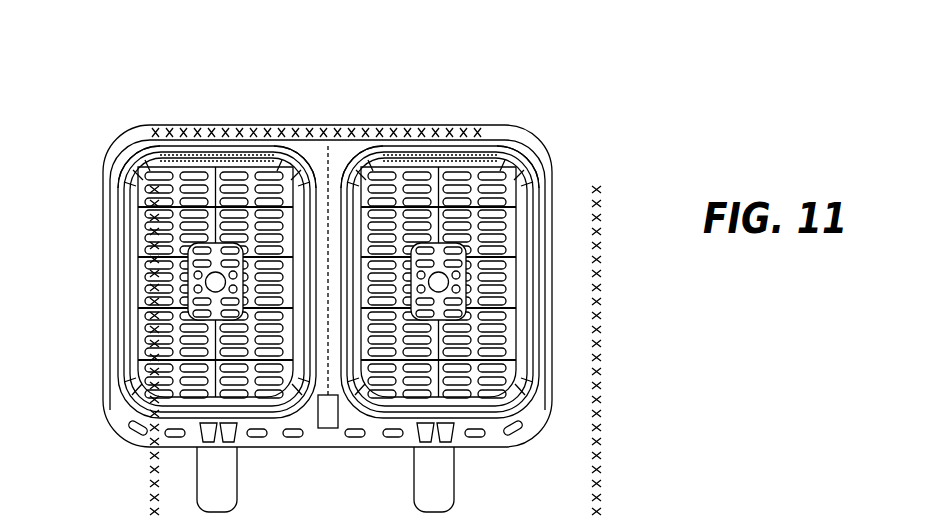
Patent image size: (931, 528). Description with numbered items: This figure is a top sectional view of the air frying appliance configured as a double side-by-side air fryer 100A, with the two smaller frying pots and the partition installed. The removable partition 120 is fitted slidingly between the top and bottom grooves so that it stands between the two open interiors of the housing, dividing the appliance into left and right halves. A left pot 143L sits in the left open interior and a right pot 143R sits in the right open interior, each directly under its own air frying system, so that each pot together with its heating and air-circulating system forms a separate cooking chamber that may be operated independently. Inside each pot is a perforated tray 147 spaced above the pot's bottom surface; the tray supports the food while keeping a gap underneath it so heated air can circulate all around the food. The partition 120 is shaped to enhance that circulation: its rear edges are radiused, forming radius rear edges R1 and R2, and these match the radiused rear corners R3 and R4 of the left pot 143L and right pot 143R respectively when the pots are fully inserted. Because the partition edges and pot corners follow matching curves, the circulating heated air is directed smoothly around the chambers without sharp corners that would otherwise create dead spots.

The double side-by-side air fryer 100A is at (212, 50).
The perforated tray 147 is at (137, 263).
The left pot 143L is at (172, 450).
The right pot 143R is at (498, 447).
The removable partition 120 is at (332, 425).
The radius rear edge R1 is at (302, 177).
The radius rear edge R2 is at (351, 174).
The radiused rear corner R3 is at (302, 160).
The radiused rear corner R4 is at (363, 149).